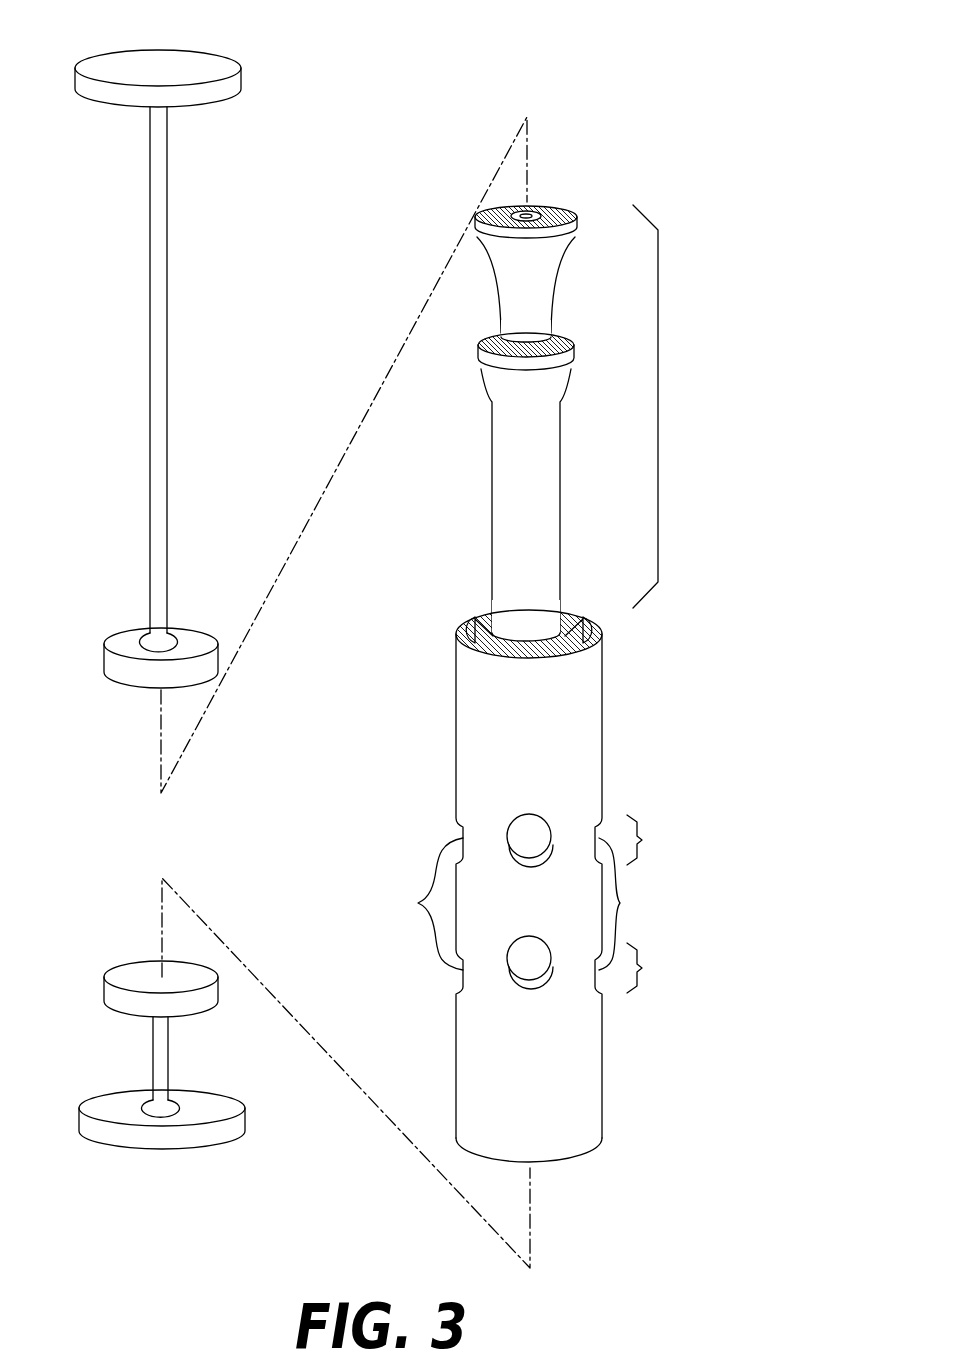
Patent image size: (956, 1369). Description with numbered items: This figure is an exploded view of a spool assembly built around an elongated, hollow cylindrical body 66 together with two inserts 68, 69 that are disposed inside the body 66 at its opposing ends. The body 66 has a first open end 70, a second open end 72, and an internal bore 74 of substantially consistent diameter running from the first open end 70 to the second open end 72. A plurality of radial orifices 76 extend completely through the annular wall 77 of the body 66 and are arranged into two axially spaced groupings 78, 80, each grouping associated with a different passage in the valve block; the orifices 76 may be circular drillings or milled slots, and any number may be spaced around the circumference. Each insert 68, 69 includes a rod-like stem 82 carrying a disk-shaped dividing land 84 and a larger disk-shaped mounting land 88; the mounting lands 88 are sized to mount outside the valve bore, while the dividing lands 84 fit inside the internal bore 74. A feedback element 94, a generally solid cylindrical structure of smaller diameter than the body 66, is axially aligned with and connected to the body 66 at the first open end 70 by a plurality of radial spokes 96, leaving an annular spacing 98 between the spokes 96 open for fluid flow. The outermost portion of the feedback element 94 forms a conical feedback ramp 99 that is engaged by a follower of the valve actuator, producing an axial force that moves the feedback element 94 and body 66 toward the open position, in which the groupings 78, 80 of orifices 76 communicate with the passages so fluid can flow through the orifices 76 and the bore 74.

The body 66 is at (774, 504).
The insert 68 is at (258, 272).
The insert 69 is at (263, 940).
The first open end 70 is at (533, 839).
The second open end 72 is at (630, 1138).
The internal bore 74 is at (528, 830).
The radial orifices 76 is at (418, 903).
The annular wall 77 is at (602, 1078).
The grouping 78 is at (642, 840).
The grouping 80 is at (642, 968).
The stem 82 is at (158, 490).
The dividing land 84 is at (105, 658).
The mounting land 88 is at (241, 79).
The feedback element 94 is at (660, 406).
The spokes 96 is at (562, 612).
The annular spacing 98 is at (468, 625).
The conical feedback ramp 99 is at (557, 285).